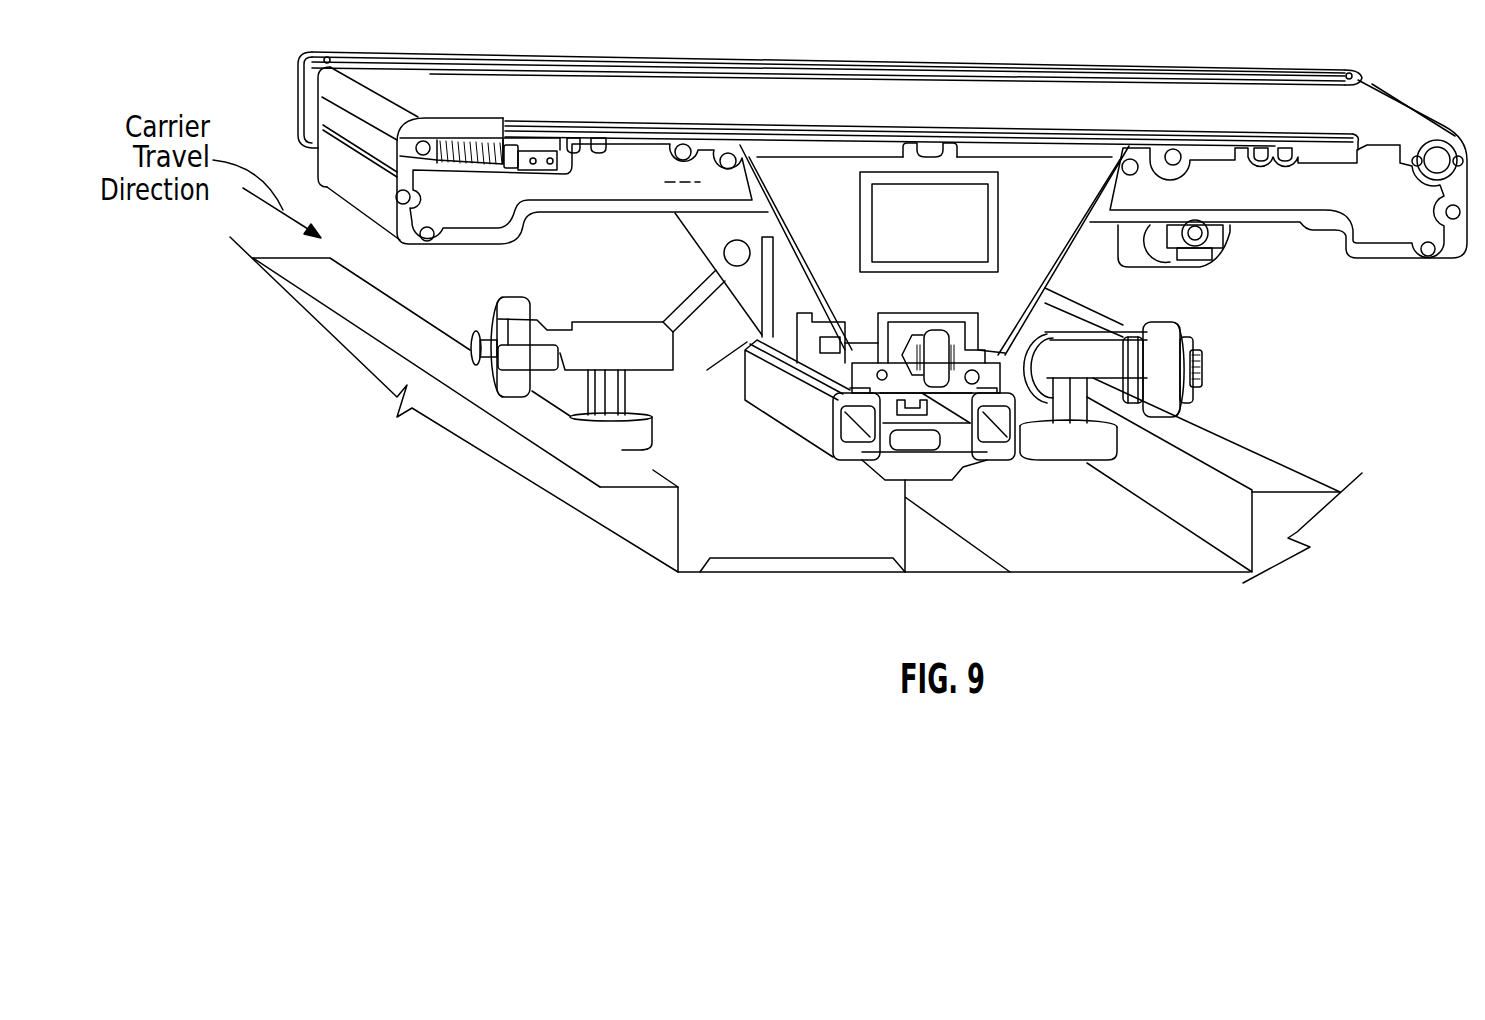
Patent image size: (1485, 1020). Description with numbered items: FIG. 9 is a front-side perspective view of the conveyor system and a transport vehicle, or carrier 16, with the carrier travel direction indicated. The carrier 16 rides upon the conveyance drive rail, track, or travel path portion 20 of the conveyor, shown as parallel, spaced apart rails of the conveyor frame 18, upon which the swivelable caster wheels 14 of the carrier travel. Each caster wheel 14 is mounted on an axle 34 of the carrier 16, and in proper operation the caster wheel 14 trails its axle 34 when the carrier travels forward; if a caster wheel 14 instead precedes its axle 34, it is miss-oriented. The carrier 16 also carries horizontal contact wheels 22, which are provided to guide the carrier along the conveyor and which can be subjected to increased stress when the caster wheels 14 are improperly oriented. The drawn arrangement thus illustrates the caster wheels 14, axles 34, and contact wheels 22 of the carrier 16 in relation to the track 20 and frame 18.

The caster wheel 14 is at (521, 303).
The carrier 16 is at (1283, 203).
The frame 18 is at (563, 482).
The track 20 is at (639, 481).
The horizontal contact wheel 22 is at (639, 434).
The axle 34 is at (654, 322).